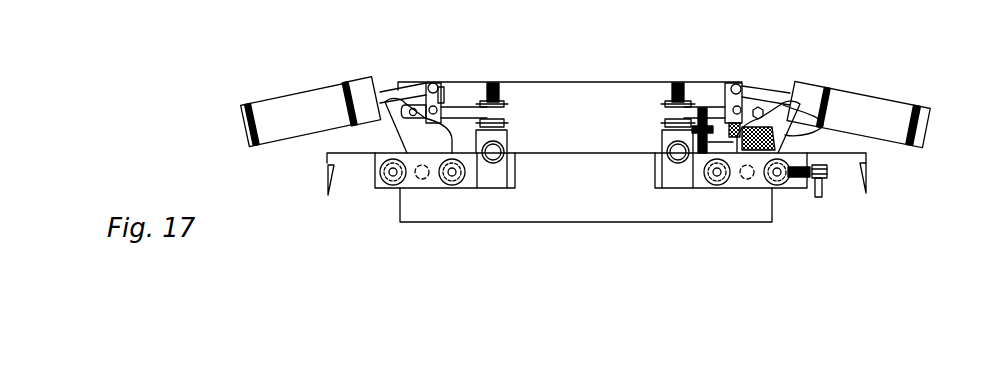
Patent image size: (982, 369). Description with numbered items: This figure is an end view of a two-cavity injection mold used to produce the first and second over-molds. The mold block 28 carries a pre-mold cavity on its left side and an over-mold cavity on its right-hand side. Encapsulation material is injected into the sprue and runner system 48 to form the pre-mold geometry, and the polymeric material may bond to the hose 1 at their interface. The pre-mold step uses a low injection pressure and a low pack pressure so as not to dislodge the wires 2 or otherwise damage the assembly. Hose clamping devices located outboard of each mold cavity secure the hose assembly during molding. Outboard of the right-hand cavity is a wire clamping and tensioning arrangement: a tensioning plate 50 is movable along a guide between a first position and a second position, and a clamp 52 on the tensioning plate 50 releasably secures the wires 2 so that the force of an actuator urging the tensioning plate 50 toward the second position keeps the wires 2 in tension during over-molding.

The hose 1 is at (498, 163).
The wires 2 is at (484, 148).
The mold block 28 is at (412, 213).
The sprue and runner system 48 is at (475, 107).
The tensioning plate 50 is at (800, 183).
The clamp 52 is at (752, 140).